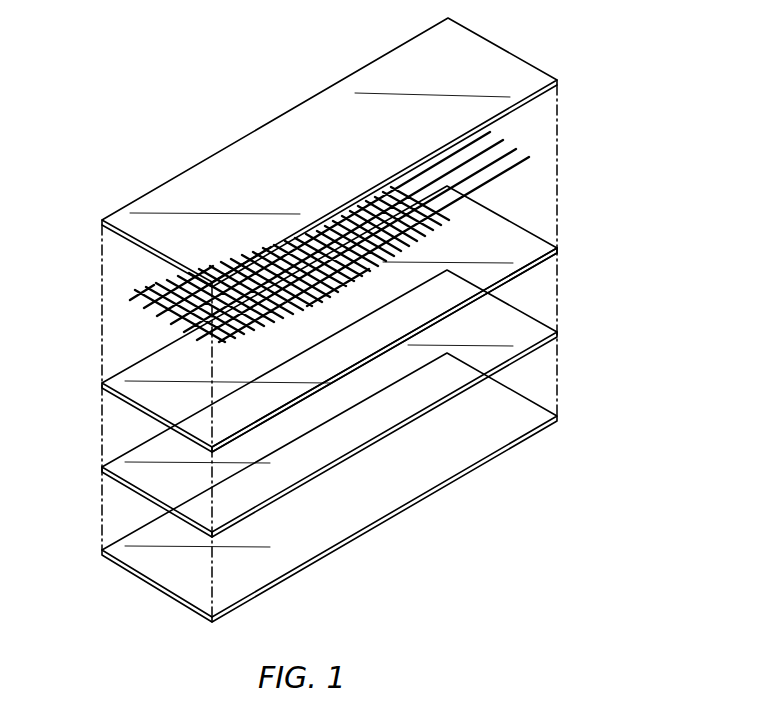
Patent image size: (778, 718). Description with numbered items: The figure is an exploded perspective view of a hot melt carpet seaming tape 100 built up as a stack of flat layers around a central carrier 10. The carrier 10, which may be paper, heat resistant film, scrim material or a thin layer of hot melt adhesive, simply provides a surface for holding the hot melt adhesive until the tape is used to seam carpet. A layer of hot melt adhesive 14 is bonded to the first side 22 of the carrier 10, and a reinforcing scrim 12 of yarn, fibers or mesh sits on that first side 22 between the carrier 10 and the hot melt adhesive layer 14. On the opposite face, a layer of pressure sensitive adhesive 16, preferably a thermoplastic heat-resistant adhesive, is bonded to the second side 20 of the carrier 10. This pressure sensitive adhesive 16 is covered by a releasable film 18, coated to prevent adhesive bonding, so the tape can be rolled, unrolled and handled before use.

The hot melt carpet seaming tape 100 is at (588, 107).
The layer of hot melt adhesive 14 is at (102, 220).
The reinforcing scrim 12 is at (125, 304).
The carrier 10 is at (102, 383).
The first side 22 is at (537, 243).
The second side 20 is at (537, 266).
The layer of pressure sensitive adhesive 16 is at (102, 467).
The releasable film 18 is at (102, 550).